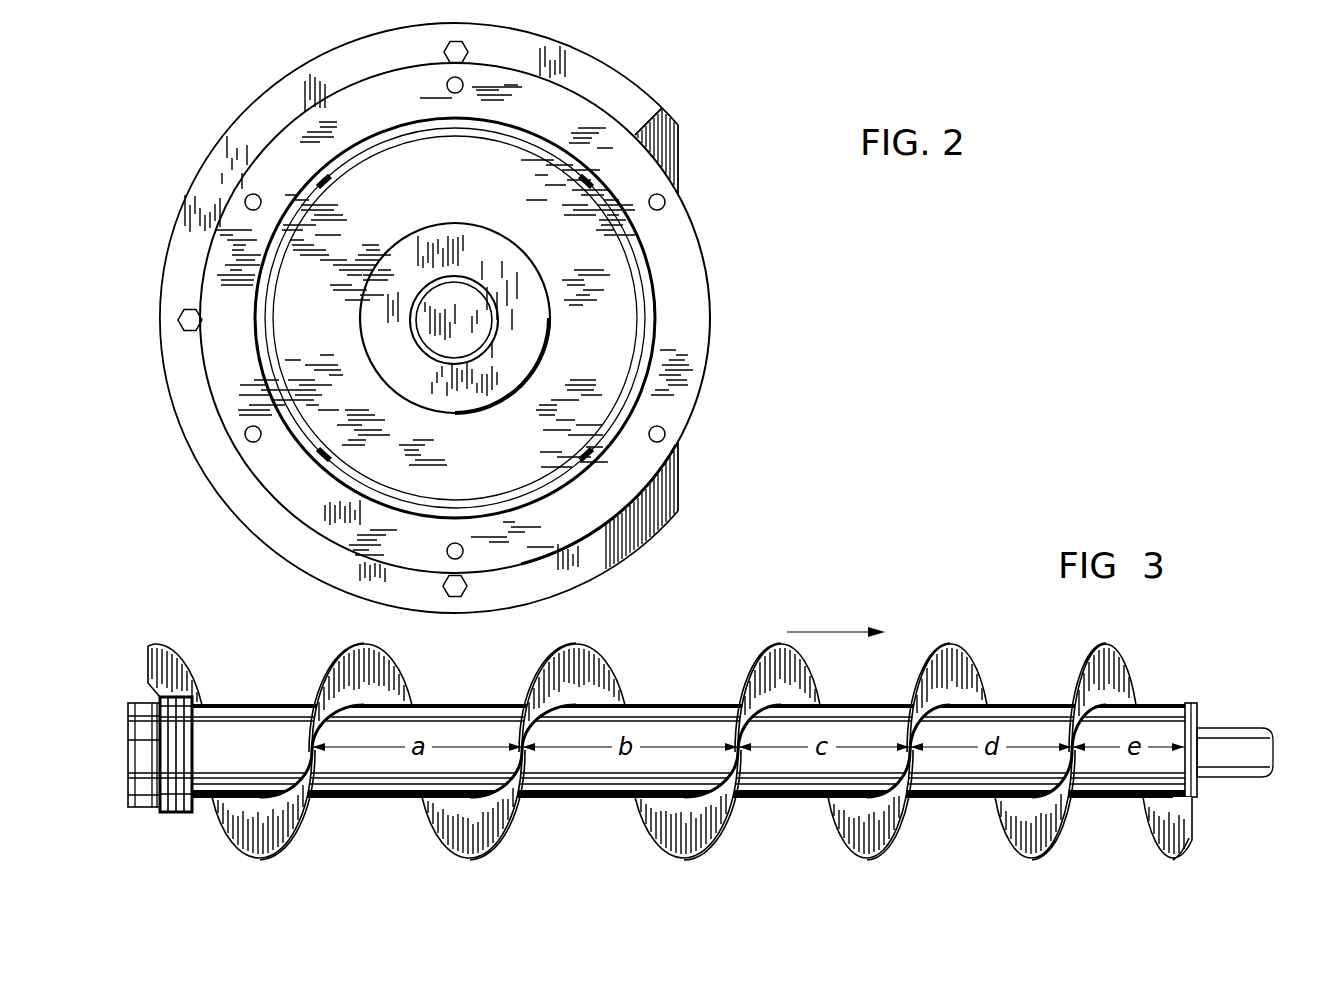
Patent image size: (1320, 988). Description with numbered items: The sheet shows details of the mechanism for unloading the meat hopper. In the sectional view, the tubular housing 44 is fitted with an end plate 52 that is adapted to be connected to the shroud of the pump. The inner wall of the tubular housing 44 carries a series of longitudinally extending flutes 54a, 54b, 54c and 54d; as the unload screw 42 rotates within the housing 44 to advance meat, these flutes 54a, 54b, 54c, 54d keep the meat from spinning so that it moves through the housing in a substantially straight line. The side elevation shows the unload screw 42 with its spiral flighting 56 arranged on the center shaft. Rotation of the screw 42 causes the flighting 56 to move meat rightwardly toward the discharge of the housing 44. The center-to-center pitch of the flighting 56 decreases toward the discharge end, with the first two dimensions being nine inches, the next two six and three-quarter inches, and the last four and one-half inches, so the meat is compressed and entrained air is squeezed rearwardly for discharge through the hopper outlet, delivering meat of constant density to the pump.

In FIG. 2, the unload screw 42 is at (648, 250).
In FIG. 3, the unload screw 42 is at (683, 660).
In FIG. 2, the tubular housing 44 is at (640, 292).
In FIG. 2, the end plate 52 is at (633, 138).
In FIG. 2, the flute 54a is at (583, 168).
In FIG. 2, the flute 54b is at (598, 442).
In FIG. 2, the flute 54c is at (330, 450).
In FIG. 2, the flute 54d is at (332, 185).
In FIG. 3, the spiral flighting 56 is at (508, 826).